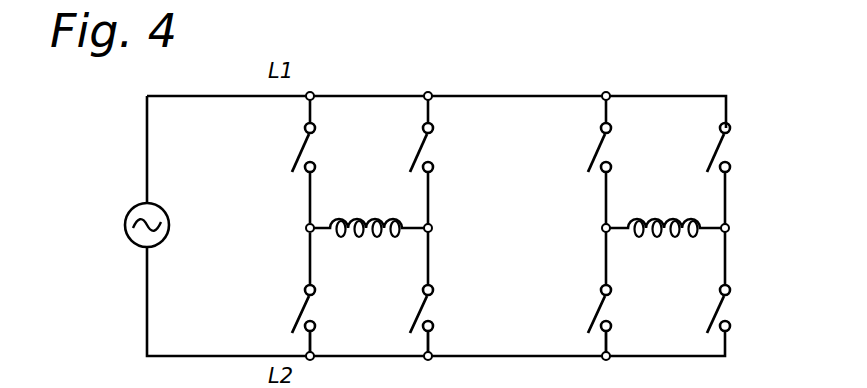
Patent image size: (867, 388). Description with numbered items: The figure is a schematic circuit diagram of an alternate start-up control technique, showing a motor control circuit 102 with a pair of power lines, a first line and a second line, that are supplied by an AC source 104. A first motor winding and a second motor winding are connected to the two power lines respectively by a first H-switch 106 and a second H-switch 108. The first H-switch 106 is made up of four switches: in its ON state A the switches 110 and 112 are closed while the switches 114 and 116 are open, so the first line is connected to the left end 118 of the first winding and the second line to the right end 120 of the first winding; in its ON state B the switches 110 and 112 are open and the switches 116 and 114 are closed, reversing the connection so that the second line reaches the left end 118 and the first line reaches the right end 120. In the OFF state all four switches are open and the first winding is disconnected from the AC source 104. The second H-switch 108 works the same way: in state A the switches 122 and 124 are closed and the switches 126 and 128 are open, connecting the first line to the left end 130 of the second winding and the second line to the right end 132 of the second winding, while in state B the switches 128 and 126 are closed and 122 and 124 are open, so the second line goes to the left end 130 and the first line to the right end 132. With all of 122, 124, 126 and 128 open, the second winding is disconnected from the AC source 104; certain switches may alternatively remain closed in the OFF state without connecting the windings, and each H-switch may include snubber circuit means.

The motor control circuit 102 is at (111, 124).
The AC source 104 is at (130, 210).
The first H-switch 106 is at (451, 204).
The second H-switch 108 is at (748, 205).
The switch 110 is at (299, 148).
The switch 112 is at (433, 310).
The switch 114 is at (434, 146).
The switch 116 is at (300, 295).
The left end of W1 118 is at (305, 228).
The right end of W1 120 is at (433, 228).
The switch 122 is at (587, 153).
The switch 124 is at (731, 310).
The switch 126 is at (730, 150).
The switch 128 is at (598, 300).
The left end of W2 130 is at (602, 228).
The right end of W2 132 is at (730, 228).